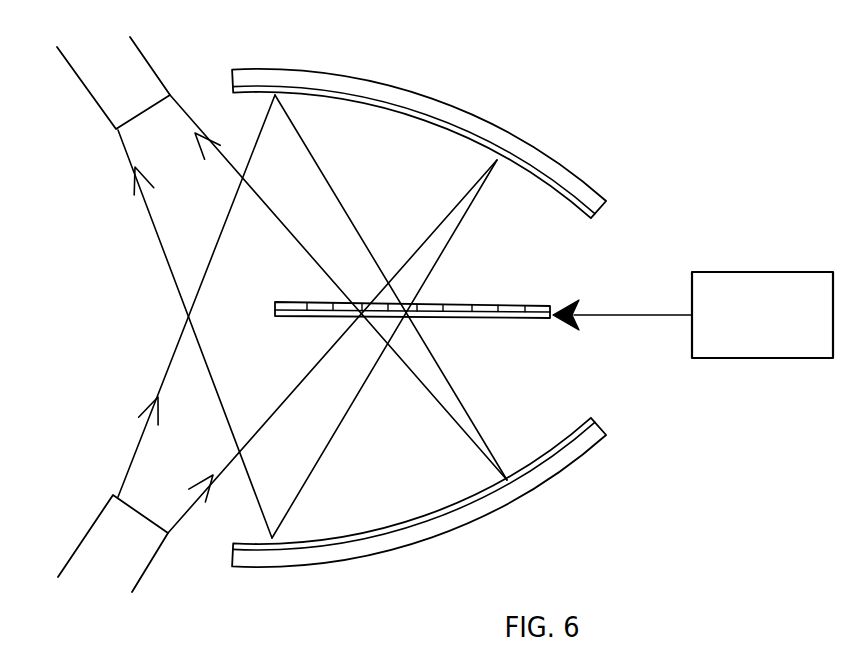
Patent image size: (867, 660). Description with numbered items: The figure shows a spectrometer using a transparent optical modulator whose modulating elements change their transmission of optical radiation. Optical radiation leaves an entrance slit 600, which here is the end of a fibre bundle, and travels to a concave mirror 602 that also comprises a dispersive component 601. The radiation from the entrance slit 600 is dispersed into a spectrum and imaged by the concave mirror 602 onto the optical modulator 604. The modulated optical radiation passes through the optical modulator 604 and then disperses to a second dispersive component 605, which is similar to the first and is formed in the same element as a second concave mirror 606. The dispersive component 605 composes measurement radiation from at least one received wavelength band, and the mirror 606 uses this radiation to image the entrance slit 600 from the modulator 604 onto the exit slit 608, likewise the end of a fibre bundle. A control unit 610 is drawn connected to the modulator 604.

The entrance slit 600 is at (118, 497).
The dispersive component 601 is at (415, 118).
The concave mirror 602 is at (330, 68).
The optical modulator 604 is at (510, 322).
The dispersive component 605 is at (437, 510).
The concave mirror 606 is at (580, 467).
The exit slit 608 is at (118, 132).
The control unit 610 is at (760, 272).